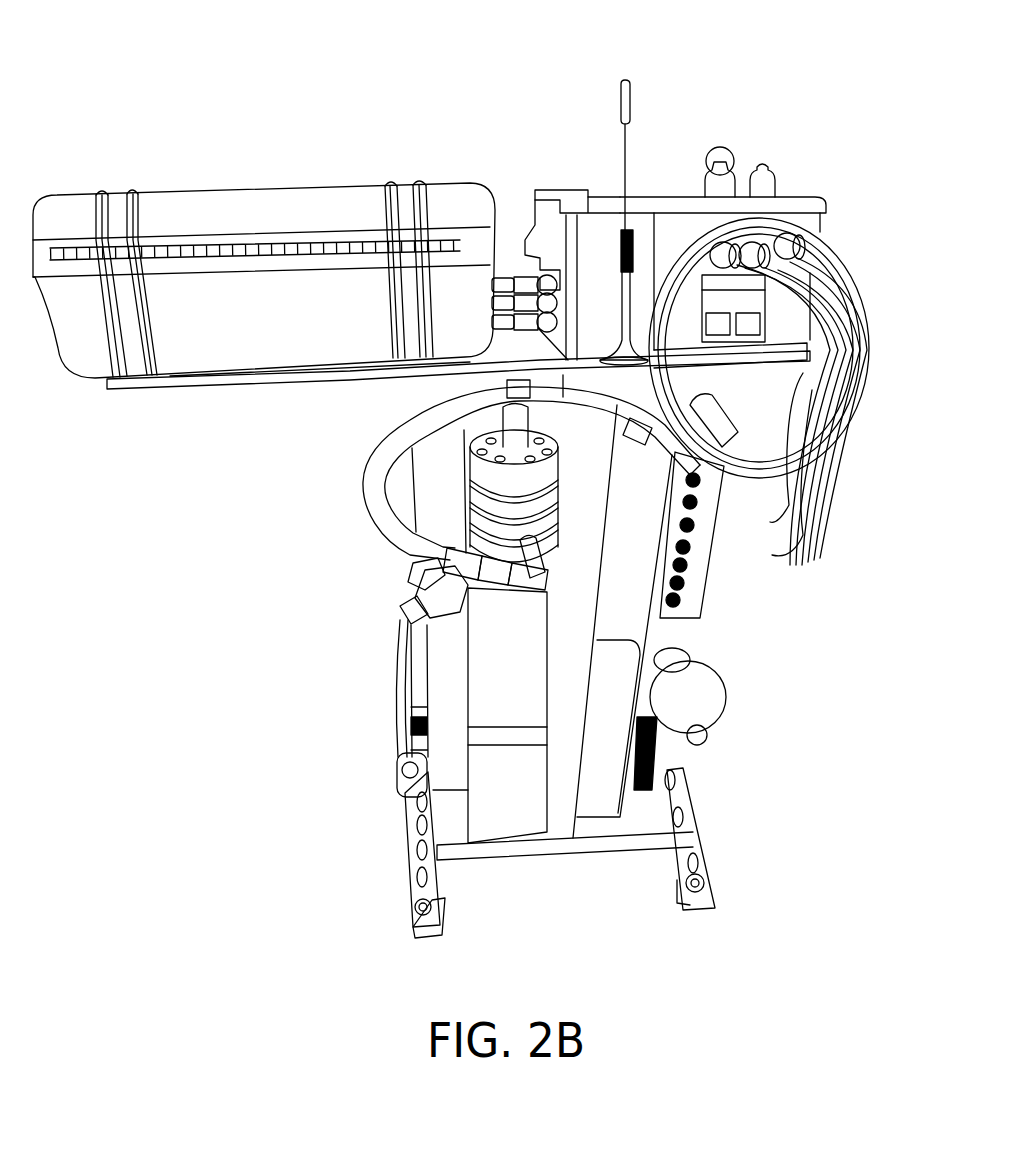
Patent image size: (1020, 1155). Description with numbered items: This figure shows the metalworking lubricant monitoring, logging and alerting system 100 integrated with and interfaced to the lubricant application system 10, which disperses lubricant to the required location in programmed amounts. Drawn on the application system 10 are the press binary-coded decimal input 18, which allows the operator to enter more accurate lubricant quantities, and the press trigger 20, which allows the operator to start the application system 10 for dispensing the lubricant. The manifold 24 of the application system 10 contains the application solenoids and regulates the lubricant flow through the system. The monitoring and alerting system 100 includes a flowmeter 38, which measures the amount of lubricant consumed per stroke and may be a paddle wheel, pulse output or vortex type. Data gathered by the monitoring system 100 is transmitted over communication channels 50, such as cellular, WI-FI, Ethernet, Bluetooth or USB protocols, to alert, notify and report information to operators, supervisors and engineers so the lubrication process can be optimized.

The metalworking lubricant monitoring, logging and alerting system 100 is at (417, 105).
The lubricant application system 10 is at (763, 90).
The communication channels 50 is at (610, 331).
The press binary-coded decimal (BCD) input 18 is at (803, 258).
The press trigger 20 is at (803, 460).
The flowmeter 38 is at (465, 447).
The manifold 24 is at (700, 560).